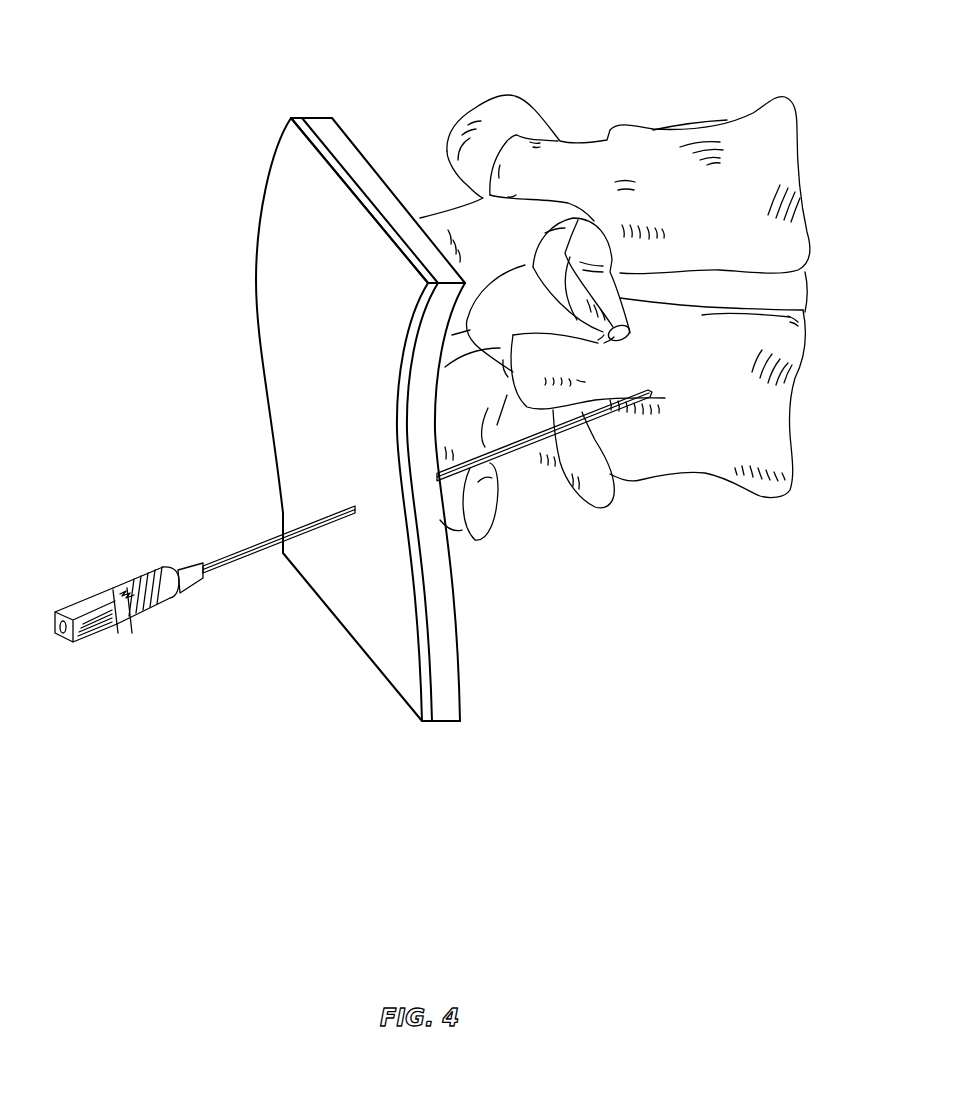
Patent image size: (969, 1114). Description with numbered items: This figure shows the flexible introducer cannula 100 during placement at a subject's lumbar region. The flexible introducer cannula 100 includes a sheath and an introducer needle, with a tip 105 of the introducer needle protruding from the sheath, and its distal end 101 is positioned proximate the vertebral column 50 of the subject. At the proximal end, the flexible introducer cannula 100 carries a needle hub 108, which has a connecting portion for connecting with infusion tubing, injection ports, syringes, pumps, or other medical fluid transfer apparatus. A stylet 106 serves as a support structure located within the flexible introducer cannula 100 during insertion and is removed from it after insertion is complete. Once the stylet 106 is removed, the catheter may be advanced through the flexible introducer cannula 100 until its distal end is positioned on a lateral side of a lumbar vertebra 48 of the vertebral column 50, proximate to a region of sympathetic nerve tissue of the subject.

The vertebral column 50 is at (688, 70).
The vertebra 48 is at (758, 437).
The flexible introducer cannula 100 is at (178, 505).
The distal end 101 is at (613, 435).
The tip 105 is at (650, 392).
The stylet 106 is at (100, 627).
The needle hub 108 is at (150, 603).